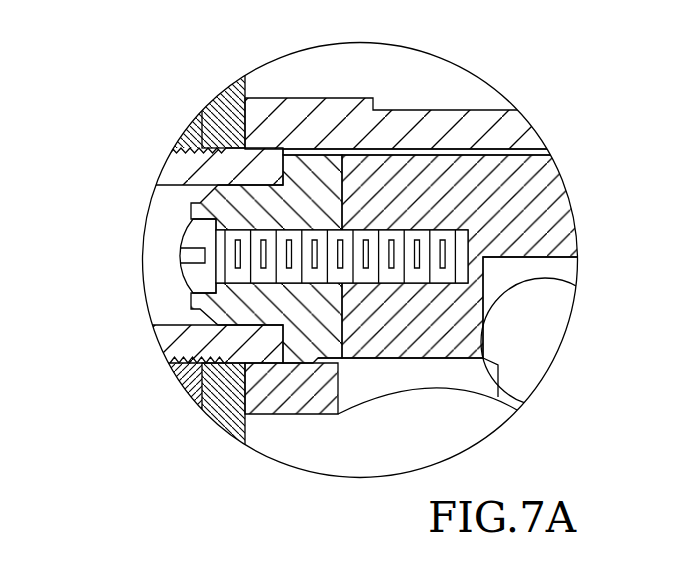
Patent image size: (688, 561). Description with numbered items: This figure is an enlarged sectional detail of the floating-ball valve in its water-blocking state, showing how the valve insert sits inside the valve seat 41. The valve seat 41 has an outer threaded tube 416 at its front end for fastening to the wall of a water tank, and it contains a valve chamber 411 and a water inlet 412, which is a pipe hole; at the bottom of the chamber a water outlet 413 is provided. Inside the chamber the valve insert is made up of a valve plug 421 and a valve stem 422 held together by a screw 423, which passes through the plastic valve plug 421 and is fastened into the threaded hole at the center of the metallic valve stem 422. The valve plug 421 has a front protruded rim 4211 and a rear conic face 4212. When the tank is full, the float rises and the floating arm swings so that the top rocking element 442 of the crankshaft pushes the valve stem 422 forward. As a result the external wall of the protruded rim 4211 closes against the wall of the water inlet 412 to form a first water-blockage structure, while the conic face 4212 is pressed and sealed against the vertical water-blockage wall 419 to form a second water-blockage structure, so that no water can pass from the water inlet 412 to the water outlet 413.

The valve seat 41 is at (324, 100).
The valve chamber 411 is at (522, 152).
The water inlet 412 is at (180, 188).
The water outlet 413 is at (462, 383).
The outer threaded tube 416 is at (177, 343).
The vertical water-blockage wall 419 is at (283, 347).
The valve plug 421 is at (190, 208).
The valve stem 422 is at (478, 157).
The screw 423 is at (184, 250).
The top rocking element 442 is at (570, 317).
The front protruded rim 4211 is at (200, 123).
The rear conic face 4212 is at (283, 185).